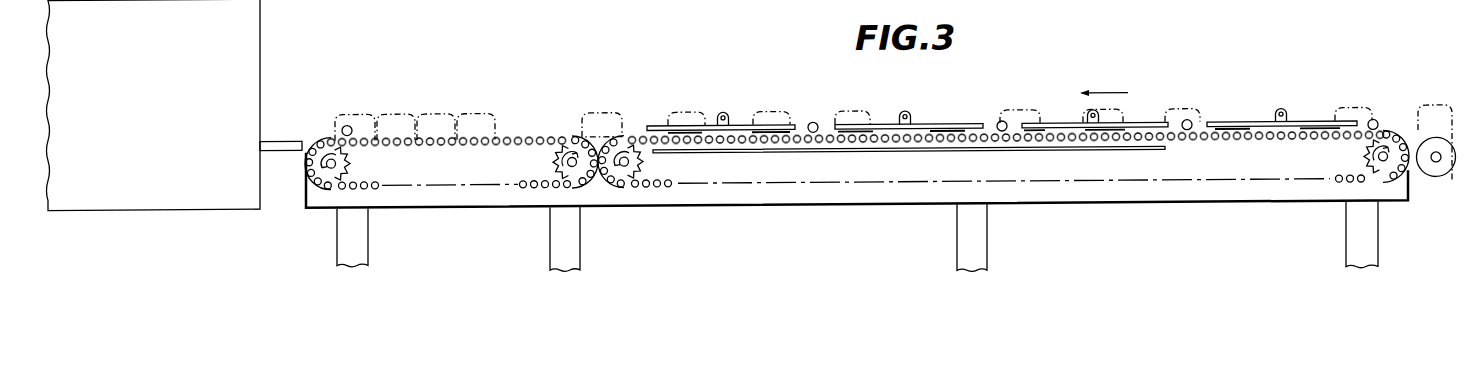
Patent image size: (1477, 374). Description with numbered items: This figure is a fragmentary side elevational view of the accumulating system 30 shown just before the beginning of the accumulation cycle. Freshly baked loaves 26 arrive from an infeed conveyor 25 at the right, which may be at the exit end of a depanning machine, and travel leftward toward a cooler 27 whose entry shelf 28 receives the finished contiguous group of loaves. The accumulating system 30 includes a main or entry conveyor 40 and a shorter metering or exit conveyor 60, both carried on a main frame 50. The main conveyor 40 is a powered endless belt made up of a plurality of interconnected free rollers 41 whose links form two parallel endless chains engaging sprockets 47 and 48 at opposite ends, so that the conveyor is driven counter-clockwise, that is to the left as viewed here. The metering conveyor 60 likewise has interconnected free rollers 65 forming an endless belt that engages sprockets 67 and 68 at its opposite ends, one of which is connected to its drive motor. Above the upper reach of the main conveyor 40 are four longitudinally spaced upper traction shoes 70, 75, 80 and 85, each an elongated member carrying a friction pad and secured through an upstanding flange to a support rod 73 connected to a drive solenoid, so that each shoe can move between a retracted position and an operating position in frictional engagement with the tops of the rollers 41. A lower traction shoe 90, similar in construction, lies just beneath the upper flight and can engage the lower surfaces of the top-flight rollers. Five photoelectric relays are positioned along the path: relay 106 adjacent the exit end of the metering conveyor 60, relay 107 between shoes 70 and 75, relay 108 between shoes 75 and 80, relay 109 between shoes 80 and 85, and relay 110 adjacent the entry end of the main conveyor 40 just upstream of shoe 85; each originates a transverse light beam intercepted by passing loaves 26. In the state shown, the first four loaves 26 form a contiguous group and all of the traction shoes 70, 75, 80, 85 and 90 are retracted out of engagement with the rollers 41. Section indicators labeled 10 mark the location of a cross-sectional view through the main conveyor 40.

The cooler 27 is at (165, 212).
The entry shelf 28 is at (278, 143).
The photoelectric relay 106 is at (347, 128).
The loaves 26 is at (438, 118).
The free rollers 65 is at (537, 141).
The sprocket 68 is at (340, 170).
The sprocket 67 is at (555, 169).
The metering conveyor 60 is at (477, 188).
The main frame 50 is at (512, 212).
The upper traction shoe 70 is at (655, 130).
The support rod 73 is at (723, 118).
The photoelectric relay 107 is at (813, 128).
The upper traction shoe 75 is at (886, 129).
The sprocket 48 is at (640, 170).
The lower traction shoe 90 is at (947, 155).
The photoelectric relay 108 is at (997, 129).
The upper traction shoe 80 is at (1060, 129).
The photoelectric relay 109 is at (1186, 128).
The upper traction shoe 85 is at (1240, 129).
The free rollers 41 is at (1260, 151).
The sprocket 47 is at (1365, 166).
The photoelectric relay 110 is at (1378, 130).
The infeed conveyor 25 is at (1443, 192).
The main conveyor 40 is at (1098, 192).
The section line 10 is at (743, 48).
The accumulating system 30 is at (1035, 70).